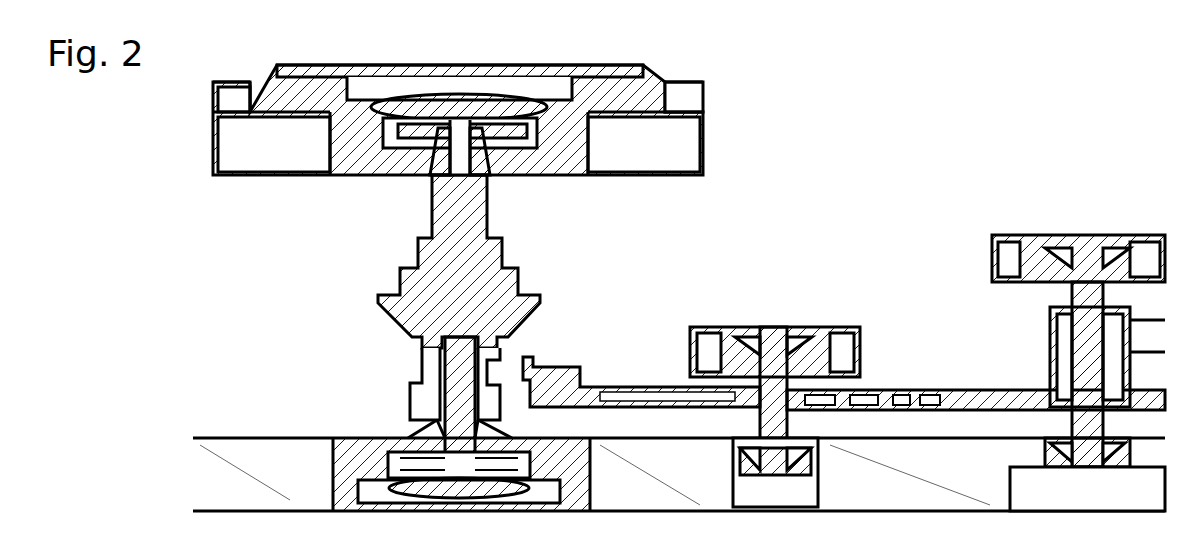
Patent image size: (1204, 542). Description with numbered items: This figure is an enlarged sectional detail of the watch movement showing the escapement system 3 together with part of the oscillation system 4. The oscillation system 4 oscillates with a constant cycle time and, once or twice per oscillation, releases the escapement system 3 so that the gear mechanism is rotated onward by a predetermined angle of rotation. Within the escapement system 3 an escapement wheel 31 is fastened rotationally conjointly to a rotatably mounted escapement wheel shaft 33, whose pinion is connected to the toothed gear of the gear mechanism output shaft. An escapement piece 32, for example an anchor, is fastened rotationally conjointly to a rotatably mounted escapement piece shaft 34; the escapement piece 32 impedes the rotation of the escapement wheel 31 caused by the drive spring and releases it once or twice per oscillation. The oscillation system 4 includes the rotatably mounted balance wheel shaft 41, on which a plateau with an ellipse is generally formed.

The escapement system 3 is at (958, 147).
The oscillation system 4 is at (230, 263).
The escapement wheel 31 is at (932, 393).
The escapement piece 32 is at (615, 385).
The escapement wheel shaft 33 is at (1088, 330).
The escapement piece shaft 34 is at (777, 387).
The balance wheel shaft 41 is at (432, 208).